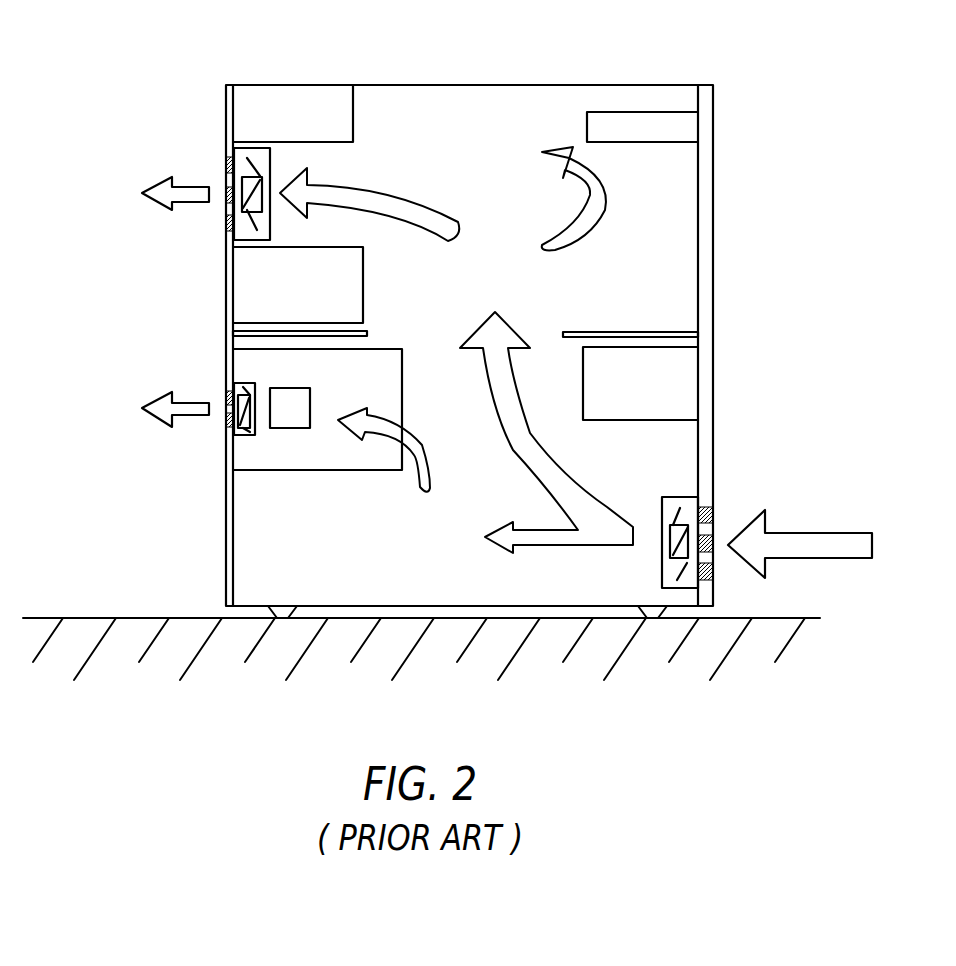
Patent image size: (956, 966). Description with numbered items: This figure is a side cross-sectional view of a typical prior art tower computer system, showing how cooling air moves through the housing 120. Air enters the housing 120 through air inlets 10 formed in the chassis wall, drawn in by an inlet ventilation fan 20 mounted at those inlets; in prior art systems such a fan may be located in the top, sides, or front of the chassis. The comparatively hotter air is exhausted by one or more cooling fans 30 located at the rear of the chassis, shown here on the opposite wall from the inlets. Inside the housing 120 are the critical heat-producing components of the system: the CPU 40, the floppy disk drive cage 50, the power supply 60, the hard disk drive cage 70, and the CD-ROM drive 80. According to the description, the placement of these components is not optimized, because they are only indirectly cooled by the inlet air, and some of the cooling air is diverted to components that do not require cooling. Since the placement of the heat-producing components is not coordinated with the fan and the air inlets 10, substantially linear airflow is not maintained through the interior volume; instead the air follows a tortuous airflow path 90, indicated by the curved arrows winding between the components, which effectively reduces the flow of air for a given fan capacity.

The air inlets 10 is at (713, 510).
The inlet ventilation fan 20 is at (662, 558).
The cooling fans 30 is at (238, 231).
The CPU 40 is at (310, 388).
The floppy disk drive cage 50 is at (688, 383).
The power supply 60 is at (363, 287).
The hard disk drive cage 70 is at (338, 98).
The CD-ROM drive 80 is at (688, 128).
The tortuous airflow path 90 is at (437, 207).
The housing 120 is at (700, 85).